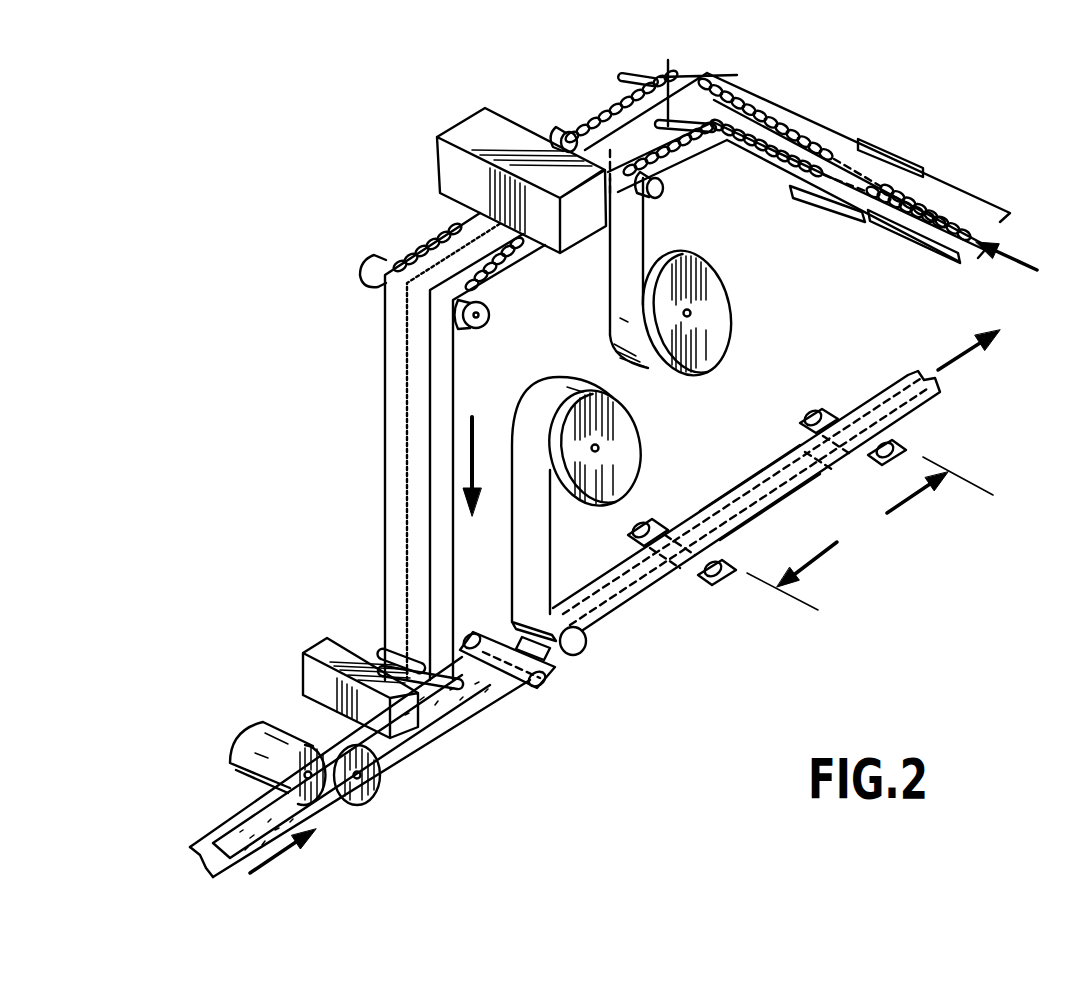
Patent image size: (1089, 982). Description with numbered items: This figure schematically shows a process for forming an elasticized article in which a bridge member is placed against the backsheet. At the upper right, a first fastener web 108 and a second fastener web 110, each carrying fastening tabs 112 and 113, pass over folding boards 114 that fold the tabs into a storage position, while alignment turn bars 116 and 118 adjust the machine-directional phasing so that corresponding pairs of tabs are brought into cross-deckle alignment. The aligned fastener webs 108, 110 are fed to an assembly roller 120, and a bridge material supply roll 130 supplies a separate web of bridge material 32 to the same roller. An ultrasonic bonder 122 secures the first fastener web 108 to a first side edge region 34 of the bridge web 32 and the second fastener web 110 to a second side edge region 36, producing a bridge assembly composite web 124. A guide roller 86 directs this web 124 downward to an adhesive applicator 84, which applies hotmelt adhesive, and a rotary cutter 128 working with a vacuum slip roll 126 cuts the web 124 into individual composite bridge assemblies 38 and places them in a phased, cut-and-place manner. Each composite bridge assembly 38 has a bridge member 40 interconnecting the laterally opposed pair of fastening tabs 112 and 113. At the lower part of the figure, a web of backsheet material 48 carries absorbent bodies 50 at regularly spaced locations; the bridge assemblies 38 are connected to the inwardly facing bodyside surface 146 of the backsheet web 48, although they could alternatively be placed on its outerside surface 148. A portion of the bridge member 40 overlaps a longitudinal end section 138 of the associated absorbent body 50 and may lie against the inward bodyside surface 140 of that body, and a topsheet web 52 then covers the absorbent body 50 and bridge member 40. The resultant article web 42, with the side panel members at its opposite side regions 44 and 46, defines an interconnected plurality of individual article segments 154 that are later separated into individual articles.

The web of bridge material 32 is at (620, 300).
The first side edge region of the web of bridge material 34 is at (645, 223).
The second side edge region of the web of bridge material 36 is at (608, 268).
The composite bridge assembly 38 is at (879, 462).
The bridge member 40 is at (502, 638).
The article web 42 is at (640, 588).
The first side region of the article web 44 is at (773, 505).
The second side region of the article web 46 is at (757, 473).
The backsheet web 48 is at (230, 870).
The absorbent body 50 is at (800, 455).
The topsheet web 52 is at (518, 547).
The adhesive applicator 84 is at (322, 650).
The guide roller 86 is at (370, 256).
The first fastener web 108 is at (778, 168).
The second fastener web 110 is at (797, 115).
The fastening tab 112 is at (747, 147).
The fastening tab 113 is at (832, 142).
The folding boards 114 is at (897, 153).
The alignment turn bar 116 is at (642, 72).
The alignment turn bar 118 is at (668, 68).
The assembly roller 120 is at (567, 128).
The ultrasonic bonder 122 is at (473, 122).
The bridge assembly composite web 124 is at (503, 268).
The vacuum slip roll 126 is at (377, 787).
The rotary cutter 128 is at (257, 733).
The bridge material supply roll 130 is at (733, 312).
The longitudinal end section of the absorbent body 138 is at (843, 428).
The inward bodyside surface of the absorbent body 140 is at (483, 683).
The inwardly facing bodyside surface of the backsheet web 146 is at (205, 858).
The outerside surface of the backsheet web 148 is at (558, 662).
The individual article segment 154 is at (870, 533).